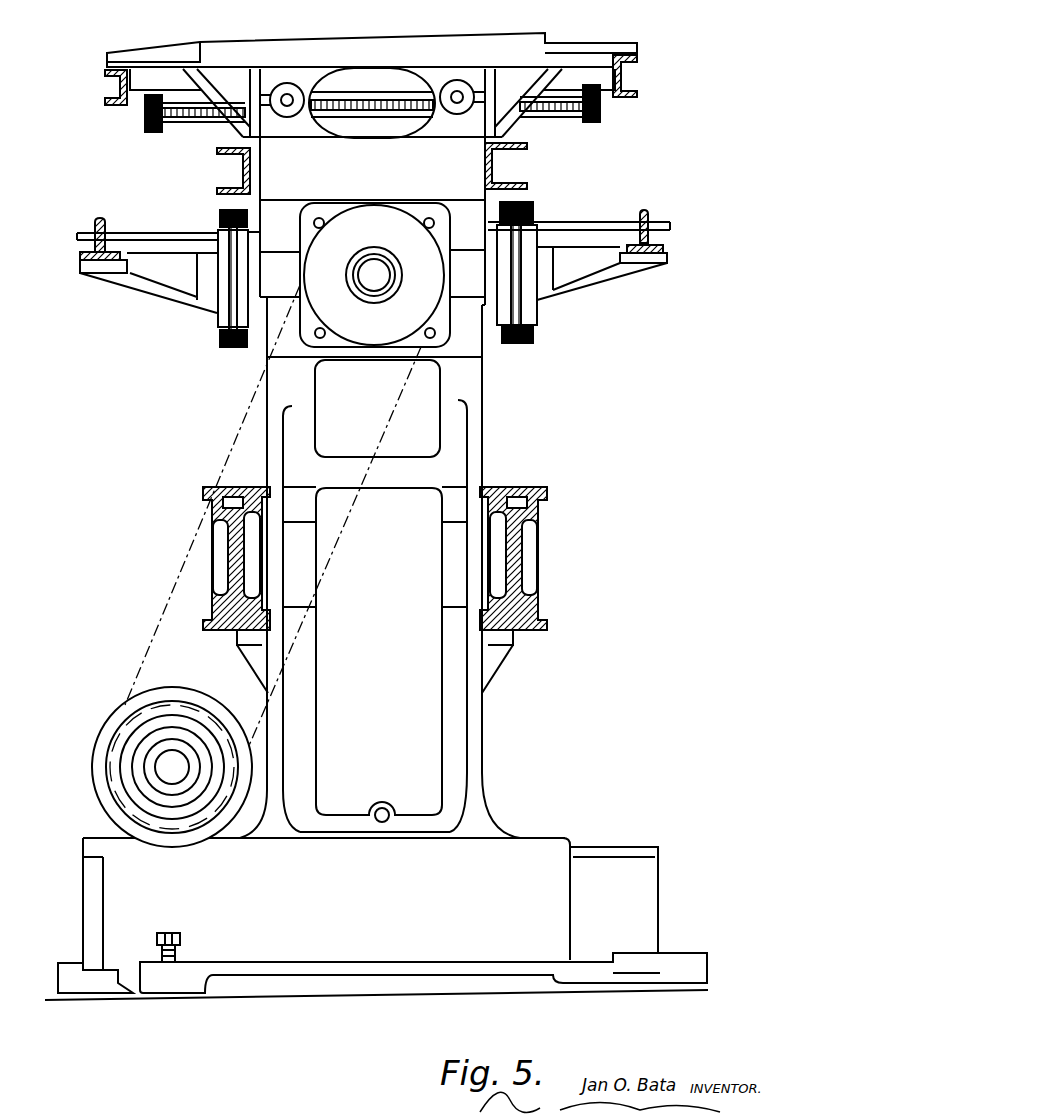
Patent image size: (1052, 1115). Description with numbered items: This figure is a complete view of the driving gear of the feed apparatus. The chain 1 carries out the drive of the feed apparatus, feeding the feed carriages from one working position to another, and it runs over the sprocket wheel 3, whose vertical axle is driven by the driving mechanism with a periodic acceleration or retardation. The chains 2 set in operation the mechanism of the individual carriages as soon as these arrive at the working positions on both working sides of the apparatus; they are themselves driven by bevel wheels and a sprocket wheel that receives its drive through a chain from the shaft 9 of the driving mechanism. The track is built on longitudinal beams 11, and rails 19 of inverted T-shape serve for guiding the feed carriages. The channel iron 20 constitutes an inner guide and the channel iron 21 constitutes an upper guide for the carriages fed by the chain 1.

The chain 1 is at (590, 118).
The chain 2 is at (228, 342).
The sprocket wheel 3 is at (553, 115).
The shaft 9 is at (167, 773).
The longitudinal beam 11 is at (552, 488).
The rail 19 is at (103, 220).
The channel iron 20 is at (500, 172).
The channel iron 21 is at (637, 90).